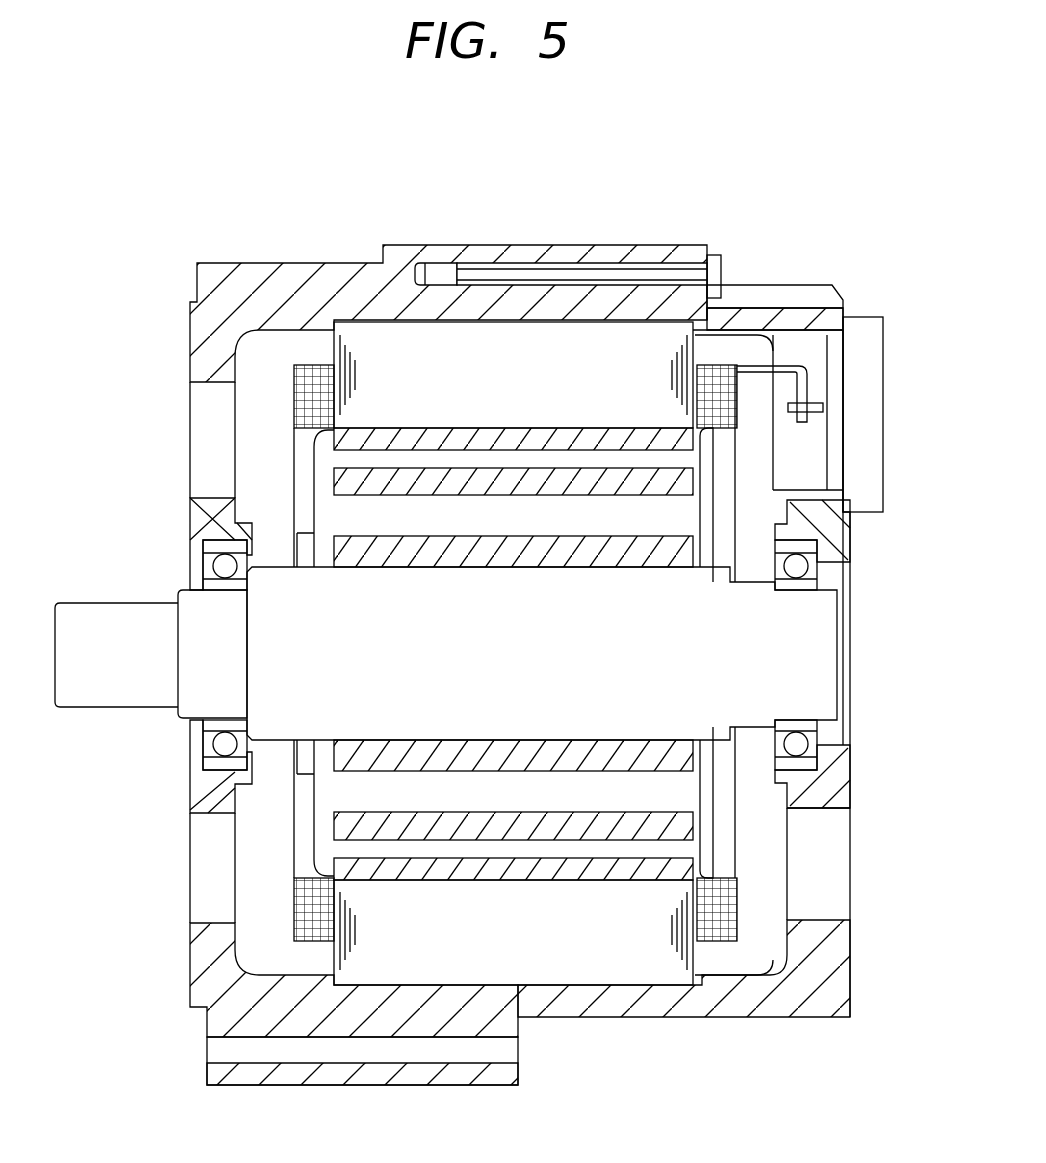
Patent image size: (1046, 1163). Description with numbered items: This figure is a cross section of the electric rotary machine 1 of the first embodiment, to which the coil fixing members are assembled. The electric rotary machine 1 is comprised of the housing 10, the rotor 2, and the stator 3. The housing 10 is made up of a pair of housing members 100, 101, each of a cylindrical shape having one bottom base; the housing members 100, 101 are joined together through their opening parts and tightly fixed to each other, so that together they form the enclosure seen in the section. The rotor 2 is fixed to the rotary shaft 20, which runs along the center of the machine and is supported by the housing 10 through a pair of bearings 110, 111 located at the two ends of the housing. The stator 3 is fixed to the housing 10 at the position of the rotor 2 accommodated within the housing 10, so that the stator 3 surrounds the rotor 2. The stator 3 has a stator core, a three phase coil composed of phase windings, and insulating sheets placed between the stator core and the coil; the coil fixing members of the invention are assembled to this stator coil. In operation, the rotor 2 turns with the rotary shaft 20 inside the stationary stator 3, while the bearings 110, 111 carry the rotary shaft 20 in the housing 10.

The electric rotary machine 1 is at (782, 214).
The rotor 2 is at (677, 480).
The stator 3 is at (611, 340).
The housing 10 is at (558, 210).
The housing member 100 is at (415, 258).
The housing member 101 is at (589, 234).
The bearing 110 is at (215, 542).
The bearing 111 is at (813, 543).
The rotary shaft 20 is at (138, 625).